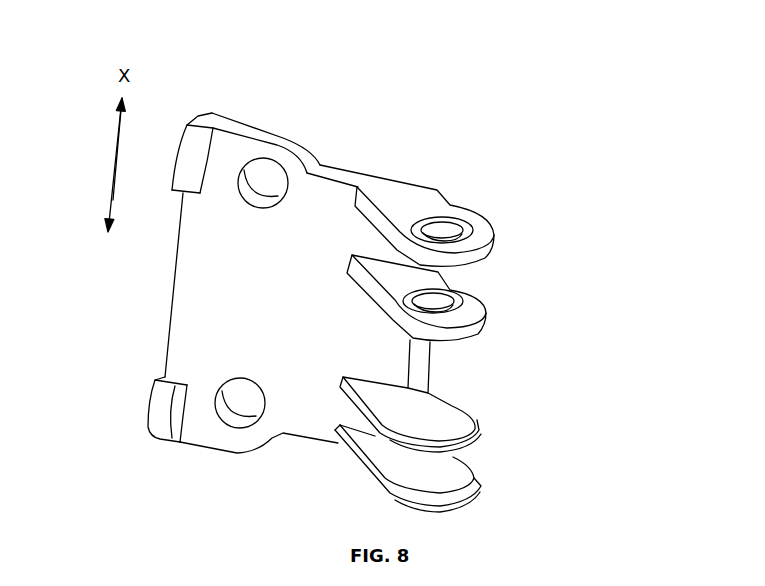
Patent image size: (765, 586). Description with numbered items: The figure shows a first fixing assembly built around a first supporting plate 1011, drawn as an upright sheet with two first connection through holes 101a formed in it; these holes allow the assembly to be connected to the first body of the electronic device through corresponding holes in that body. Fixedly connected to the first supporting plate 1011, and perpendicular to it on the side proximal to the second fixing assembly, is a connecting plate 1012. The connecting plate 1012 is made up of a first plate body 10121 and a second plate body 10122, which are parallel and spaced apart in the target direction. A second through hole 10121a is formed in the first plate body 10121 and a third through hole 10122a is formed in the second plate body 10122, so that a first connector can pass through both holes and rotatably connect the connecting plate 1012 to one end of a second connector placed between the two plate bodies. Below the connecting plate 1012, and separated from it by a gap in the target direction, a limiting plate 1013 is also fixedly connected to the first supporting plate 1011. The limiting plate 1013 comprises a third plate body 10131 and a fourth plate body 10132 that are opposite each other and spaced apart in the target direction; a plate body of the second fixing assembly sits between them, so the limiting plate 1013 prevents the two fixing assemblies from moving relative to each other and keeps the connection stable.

The first supporting plate 1011 is at (316, 215).
The first connection through hole 101a is at (264, 170).
The connecting plate 1012 is at (336, 263).
The first plate body 10121 is at (286, 215).
The second through hole 10121a is at (427, 234).
The second plate body 10122 is at (311, 312).
The third through hole 10122a is at (412, 307).
The limiting plate 1013 is at (497, 440).
The third plate body 10131 is at (449, 418).
The fourth plate body 10132 is at (449, 469).